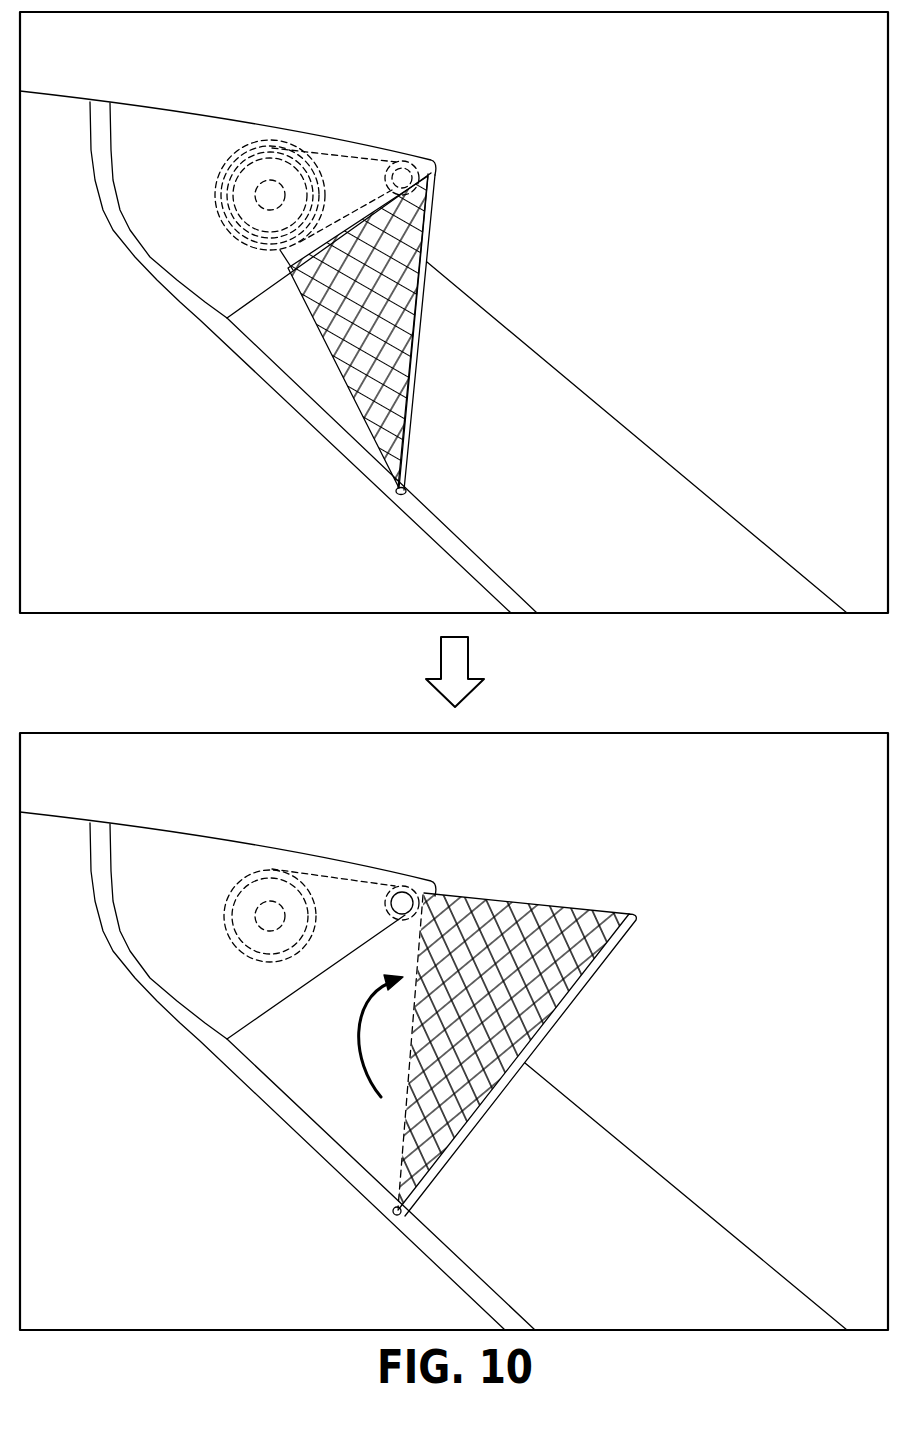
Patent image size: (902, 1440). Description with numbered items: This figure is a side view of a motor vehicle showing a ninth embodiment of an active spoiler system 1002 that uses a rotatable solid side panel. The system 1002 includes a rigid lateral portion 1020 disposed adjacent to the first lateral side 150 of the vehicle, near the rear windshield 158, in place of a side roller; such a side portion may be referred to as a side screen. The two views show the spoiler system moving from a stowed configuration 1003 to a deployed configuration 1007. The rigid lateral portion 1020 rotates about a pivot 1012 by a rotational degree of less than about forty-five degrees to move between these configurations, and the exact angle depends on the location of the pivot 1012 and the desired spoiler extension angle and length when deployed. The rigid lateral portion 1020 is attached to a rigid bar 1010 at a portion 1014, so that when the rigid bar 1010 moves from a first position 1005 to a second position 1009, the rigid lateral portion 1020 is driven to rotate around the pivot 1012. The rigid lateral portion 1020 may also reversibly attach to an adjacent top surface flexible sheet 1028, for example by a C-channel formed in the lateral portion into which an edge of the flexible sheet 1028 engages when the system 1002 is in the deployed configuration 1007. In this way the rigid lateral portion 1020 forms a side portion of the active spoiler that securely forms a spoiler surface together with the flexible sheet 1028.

The first lateral side 150 is at (157, 517).
The rear windshield 158 is at (633, 548).
The active spoiler system 1002 is at (467, 125).
The stowed configuration 1003 is at (686, 146).
The first position 1005 is at (432, 430).
The deployed configuration 1007 is at (686, 865).
The second position 1009 is at (502, 1152).
The rigid bar 1010 is at (456, 199).
The pivot 1012 is at (397, 500).
The portion 1014 is at (419, 360).
The rigid lateral portion 1020 is at (357, 358).
The top surface flexible sheet 1028 is at (538, 905).